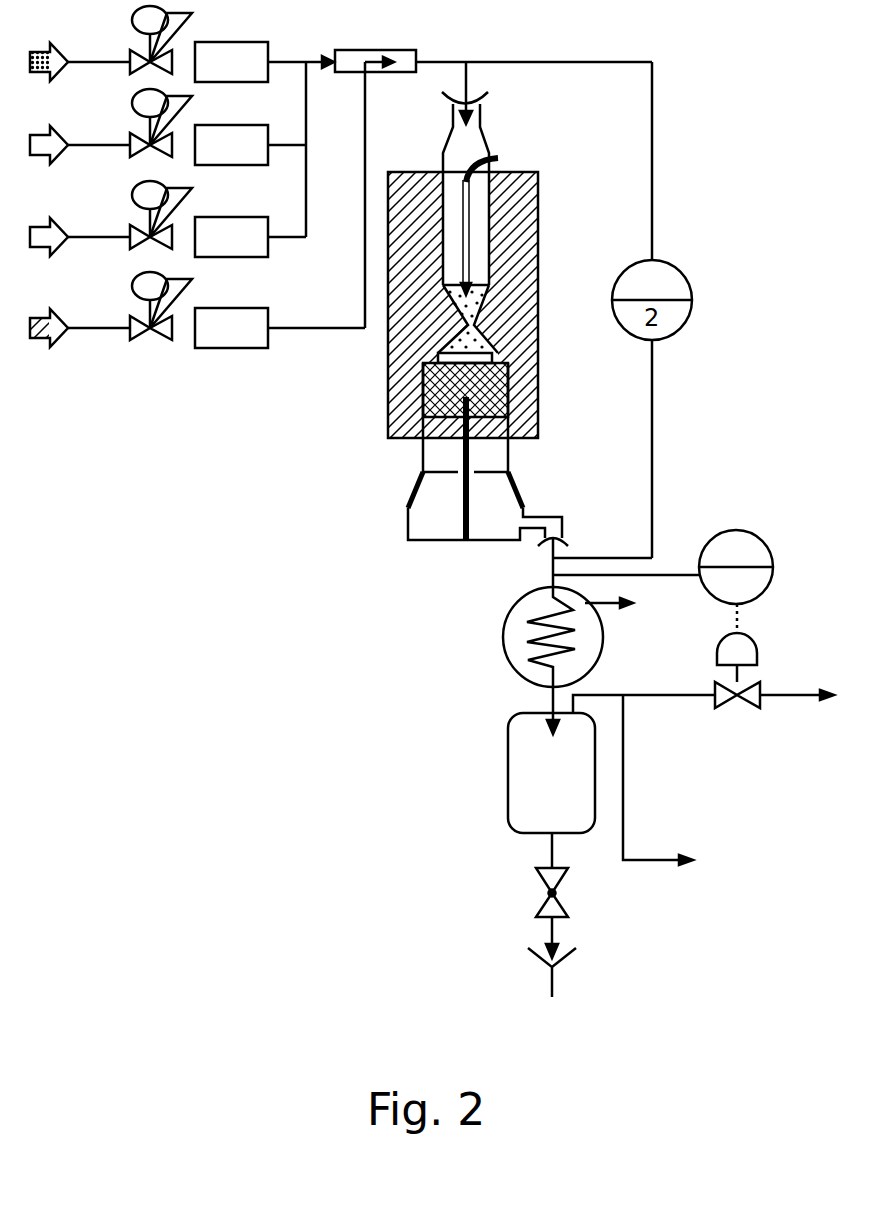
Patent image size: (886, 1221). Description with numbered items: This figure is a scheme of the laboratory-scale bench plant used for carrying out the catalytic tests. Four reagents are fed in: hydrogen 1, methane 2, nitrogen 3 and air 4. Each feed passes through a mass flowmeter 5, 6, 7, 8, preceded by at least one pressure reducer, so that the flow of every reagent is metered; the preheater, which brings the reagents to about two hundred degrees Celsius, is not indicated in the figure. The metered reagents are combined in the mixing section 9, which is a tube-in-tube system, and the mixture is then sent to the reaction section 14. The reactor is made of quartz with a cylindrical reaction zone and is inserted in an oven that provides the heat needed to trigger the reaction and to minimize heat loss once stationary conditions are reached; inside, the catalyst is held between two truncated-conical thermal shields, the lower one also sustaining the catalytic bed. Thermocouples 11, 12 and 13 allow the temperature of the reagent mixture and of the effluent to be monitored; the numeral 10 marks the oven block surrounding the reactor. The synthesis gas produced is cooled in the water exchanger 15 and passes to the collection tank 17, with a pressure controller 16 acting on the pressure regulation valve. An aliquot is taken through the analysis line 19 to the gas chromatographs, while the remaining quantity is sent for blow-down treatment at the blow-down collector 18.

The hydrogen 1 is at (80, 45).
The methane 2 is at (80, 127).
The nitrogen 3 is at (79, 221).
The air 4 is at (77, 311).
The mass flowmeter 5 is at (218, 44).
The mass flowmeter 6 is at (218, 127).
The mass flowmeter 7 is at (218, 219).
The mass flowmeter 8 is at (247, 310).
The mixing section 9 is at (375, 45).
The heated reactor block 10 is at (388, 300).
The thermocouple 11 is at (490, 200).
The thermocouple 12 is at (497, 272).
The thermocouple 13 is at (466, 397).
The reaction section 14 is at (515, 317).
The water exchanger 15 is at (495, 662).
The pressure controller 16 is at (663, 581).
The collection tank 17 is at (530, 773).
The blow-down collector 18 is at (774, 670).
The analysis line 19 is at (676, 787).